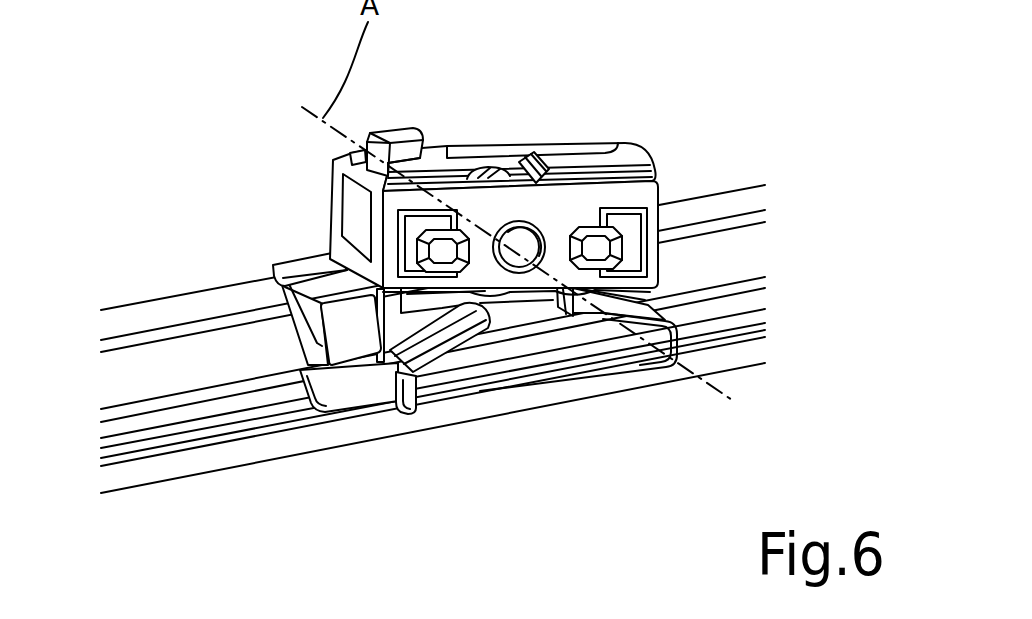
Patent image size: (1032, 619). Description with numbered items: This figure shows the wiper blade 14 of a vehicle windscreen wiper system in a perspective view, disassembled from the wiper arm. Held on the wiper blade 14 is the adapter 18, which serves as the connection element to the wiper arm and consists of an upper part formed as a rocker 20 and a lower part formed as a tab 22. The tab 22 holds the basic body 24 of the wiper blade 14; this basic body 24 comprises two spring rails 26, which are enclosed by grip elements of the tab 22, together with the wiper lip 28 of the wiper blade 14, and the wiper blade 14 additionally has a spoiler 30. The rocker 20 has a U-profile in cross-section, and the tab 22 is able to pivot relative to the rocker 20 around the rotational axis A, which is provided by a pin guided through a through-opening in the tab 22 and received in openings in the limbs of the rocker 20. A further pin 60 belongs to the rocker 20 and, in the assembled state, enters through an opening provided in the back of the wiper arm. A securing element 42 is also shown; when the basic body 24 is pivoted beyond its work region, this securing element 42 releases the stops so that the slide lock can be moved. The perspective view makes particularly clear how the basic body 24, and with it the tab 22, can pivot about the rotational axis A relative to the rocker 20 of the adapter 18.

The wiper blade 14 is at (163, 80).
The adapter 18 is at (540, 137).
The rocker 20 is at (577, 207).
The tab 22 is at (518, 352).
The basic body 24 is at (714, 168).
The spring rails 26 is at (157, 418).
The wiper lip 28 is at (300, 437).
The spoiler 30 is at (210, 303).
The securing element 42 is at (353, 388).
The pin 60 is at (405, 135).